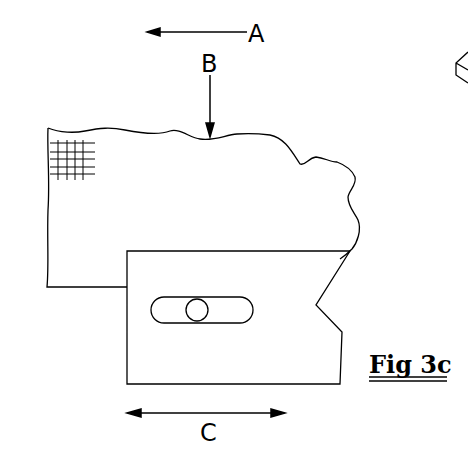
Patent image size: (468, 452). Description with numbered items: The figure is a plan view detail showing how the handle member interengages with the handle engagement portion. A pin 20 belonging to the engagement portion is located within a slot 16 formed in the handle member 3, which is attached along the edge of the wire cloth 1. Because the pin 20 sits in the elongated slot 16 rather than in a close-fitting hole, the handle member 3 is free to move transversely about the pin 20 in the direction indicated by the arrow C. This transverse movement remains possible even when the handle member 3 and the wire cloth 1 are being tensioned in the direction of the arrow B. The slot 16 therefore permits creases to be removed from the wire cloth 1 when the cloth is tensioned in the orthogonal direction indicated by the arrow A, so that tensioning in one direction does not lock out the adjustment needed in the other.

The wire cloth 1 is at (84, 273).
The handle member 3 is at (266, 278).
The slot 16 is at (165, 308).
The pin 20 is at (197, 306).